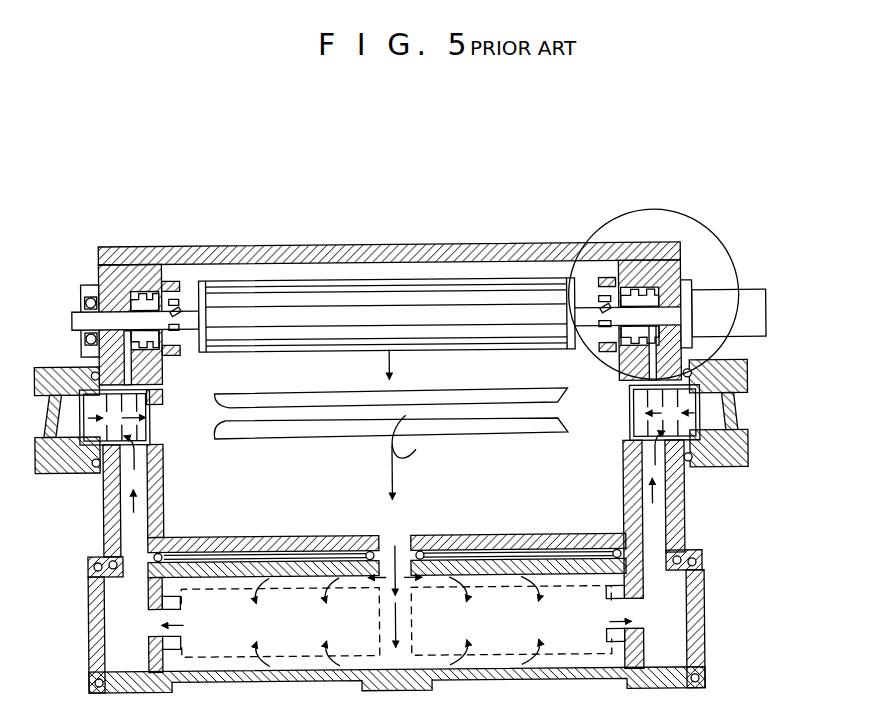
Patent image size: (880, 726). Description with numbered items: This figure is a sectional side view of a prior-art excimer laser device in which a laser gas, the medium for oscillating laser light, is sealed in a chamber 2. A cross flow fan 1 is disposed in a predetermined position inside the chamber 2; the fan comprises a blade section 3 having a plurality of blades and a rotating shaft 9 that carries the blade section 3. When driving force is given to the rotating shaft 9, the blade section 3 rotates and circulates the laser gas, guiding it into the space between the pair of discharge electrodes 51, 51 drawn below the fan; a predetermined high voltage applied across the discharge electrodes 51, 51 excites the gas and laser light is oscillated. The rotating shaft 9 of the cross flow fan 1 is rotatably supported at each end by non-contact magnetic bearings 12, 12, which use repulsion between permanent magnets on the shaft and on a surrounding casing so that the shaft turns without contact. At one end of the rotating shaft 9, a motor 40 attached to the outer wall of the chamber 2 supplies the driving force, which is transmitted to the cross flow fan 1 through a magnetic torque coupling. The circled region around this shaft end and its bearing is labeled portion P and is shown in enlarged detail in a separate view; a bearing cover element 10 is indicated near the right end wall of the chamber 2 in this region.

The cross flow fan 1 is at (386, 265).
The chamber 2 is at (183, 247).
The blade section 3 is at (288, 282).
The rotating shaft 9 is at (193, 332).
The bearing cover 10 is at (612, 270).
The magnetic bearing 12 is at (128, 300).
The motor 40 is at (718, 297).
The discharge electrode 51 is at (345, 397).
The portion P is at (683, 218).